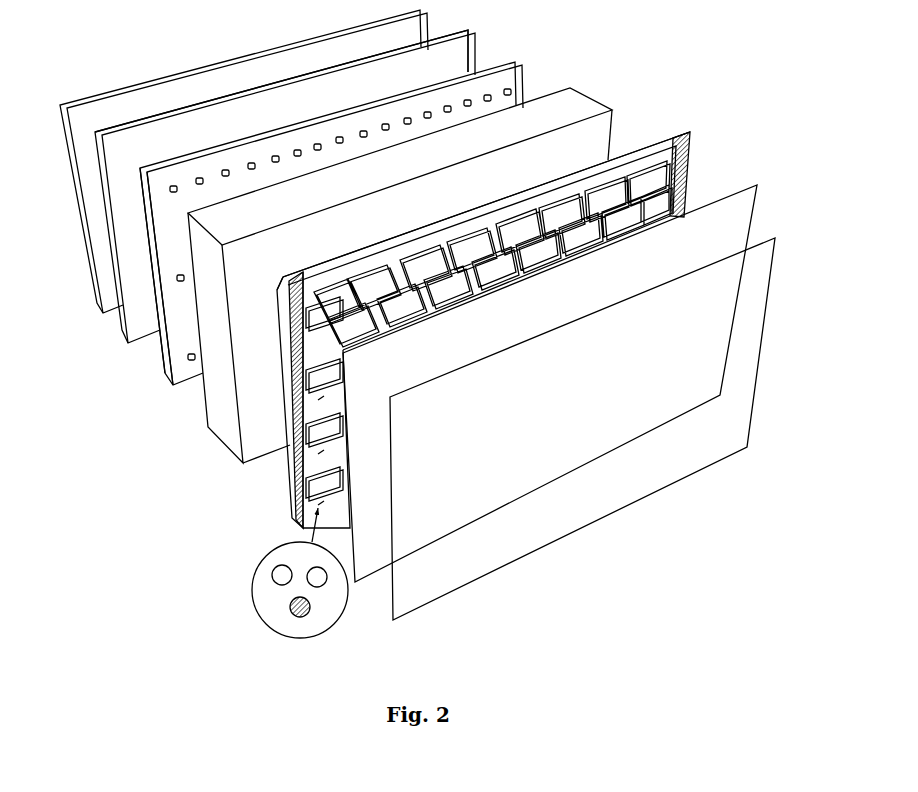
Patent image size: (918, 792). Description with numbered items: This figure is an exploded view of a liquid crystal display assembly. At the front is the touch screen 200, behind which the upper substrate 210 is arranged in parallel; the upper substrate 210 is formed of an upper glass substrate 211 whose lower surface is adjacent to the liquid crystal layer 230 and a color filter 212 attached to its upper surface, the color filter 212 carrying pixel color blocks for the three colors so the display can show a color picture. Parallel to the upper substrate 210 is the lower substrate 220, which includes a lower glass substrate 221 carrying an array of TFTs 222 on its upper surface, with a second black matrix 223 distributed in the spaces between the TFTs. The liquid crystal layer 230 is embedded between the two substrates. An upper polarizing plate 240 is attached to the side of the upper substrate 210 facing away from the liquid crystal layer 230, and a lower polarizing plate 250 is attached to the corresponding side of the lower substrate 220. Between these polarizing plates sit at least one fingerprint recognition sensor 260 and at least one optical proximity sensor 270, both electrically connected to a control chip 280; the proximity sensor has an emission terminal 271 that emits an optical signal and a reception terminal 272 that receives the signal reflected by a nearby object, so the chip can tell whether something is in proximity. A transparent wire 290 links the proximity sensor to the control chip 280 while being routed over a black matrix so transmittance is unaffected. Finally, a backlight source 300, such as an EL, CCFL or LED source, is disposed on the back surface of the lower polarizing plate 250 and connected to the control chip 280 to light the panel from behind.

The touch screen 200 is at (762, 305).
The upper substrate 210 is at (489, 330).
The upper glass substrate 211 is at (291, 476).
The color filter 212 is at (311, 411).
The lower substrate 220 is at (334, 223).
The lower glass substrate 221 is at (157, 364).
The array of TFTs 222 is at (173, 184).
The second black matrix 223 is at (154, 233).
The liquid crystal layer 230 is at (598, 128).
The upper polarizing plate 240 is at (739, 212).
The lower polarizing plate 250 is at (453, 50).
The fingerprint recognition sensor 260 is at (312, 344).
The optical proximity sensor 270 is at (277, 573).
The emission terminal 271 is at (277, 578).
The reception terminal 272 is at (292, 604).
The control chip 280 is at (679, 145).
The wire 290 is at (410, 31).
The backlight source 300 is at (470, 32).